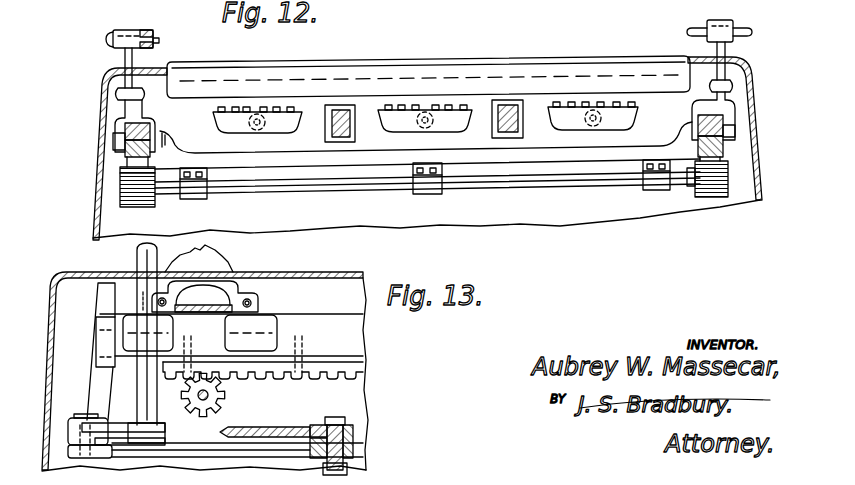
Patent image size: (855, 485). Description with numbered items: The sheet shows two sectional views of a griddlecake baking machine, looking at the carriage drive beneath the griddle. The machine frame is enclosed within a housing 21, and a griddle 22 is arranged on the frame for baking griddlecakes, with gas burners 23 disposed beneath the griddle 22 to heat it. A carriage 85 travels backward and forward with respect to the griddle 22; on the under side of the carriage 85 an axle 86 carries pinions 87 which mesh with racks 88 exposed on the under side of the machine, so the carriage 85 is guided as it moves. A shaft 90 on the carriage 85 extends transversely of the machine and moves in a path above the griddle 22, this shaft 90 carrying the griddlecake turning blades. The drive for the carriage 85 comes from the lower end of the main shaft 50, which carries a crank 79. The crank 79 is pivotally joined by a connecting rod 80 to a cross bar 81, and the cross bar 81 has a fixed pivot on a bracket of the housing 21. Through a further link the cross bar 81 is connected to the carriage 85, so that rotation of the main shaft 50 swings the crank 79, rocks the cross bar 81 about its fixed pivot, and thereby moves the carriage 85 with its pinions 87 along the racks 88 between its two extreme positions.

In FIG. 12, the housing 21 is at (104, 104).
In FIG. 12, the griddle 22 is at (441, 62).
In FIG. 12, the gas burners 23 is at (220, 121).
In FIG. 13, the main shaft 50 is at (137, 259).
In FIG. 13, the crank 79 is at (103, 428).
In FIG. 13, the connecting rod 80 is at (182, 449).
In FIG. 13, the cross bar 81 is at (287, 427).
In FIG. 12, the carriage 85 is at (122, 62).
In FIG. 13, the carriage 85 is at (208, 257).
In FIG. 12, the axle 86 is at (318, 188).
In FIG. 13, the axle 86 is at (212, 404).
In FIG. 12, the pinions 87 is at (122, 205).
In FIG. 13, the pinions 87 is at (210, 393).
In FIG. 12, the racks 88 is at (118, 143).
In FIG. 13, the racks 88 is at (335, 362).
In FIG. 12, the shaft 90 is at (159, 41).